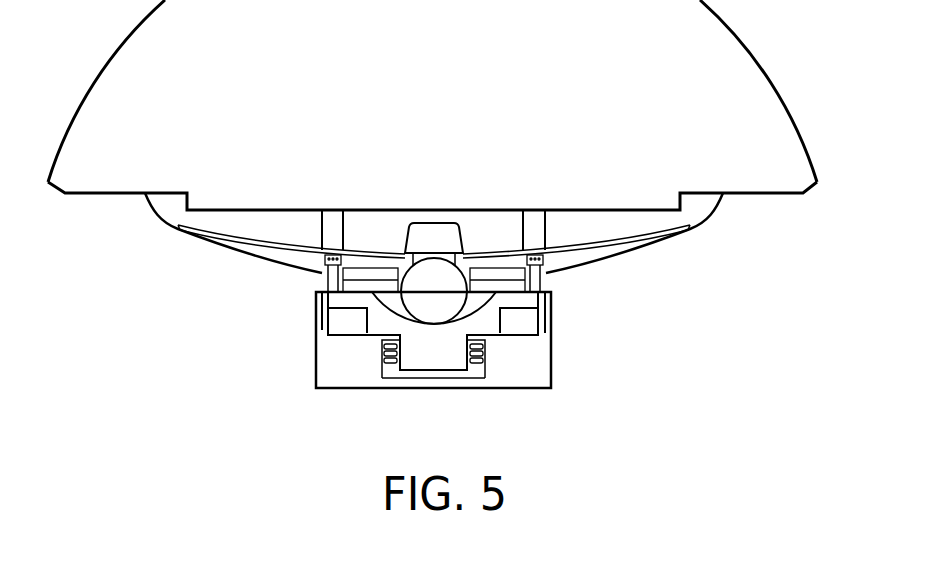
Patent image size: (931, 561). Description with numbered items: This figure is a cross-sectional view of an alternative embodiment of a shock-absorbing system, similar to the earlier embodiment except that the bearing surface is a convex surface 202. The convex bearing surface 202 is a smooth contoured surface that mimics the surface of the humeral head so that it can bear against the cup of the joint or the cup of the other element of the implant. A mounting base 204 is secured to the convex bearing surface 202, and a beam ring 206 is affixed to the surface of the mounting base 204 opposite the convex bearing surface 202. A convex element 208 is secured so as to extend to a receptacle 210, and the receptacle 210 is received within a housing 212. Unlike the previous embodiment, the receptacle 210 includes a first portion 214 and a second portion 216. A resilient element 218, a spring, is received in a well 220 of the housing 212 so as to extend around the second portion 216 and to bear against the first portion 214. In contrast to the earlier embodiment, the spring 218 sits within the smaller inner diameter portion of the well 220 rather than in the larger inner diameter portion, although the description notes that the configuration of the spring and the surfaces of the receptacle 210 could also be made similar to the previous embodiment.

The convex bearing surface 202 is at (788, 107).
The mounting base 204 is at (697, 228).
The beam ring 206 is at (615, 257).
The convex element 208 is at (453, 295).
The receptacle 210 is at (530, 323).
The housing 212 is at (540, 375).
The first portion 214 is at (337, 317).
The second portion 216 is at (430, 363).
The resilient element 218 is at (388, 367).
The well 220 is at (488, 362).